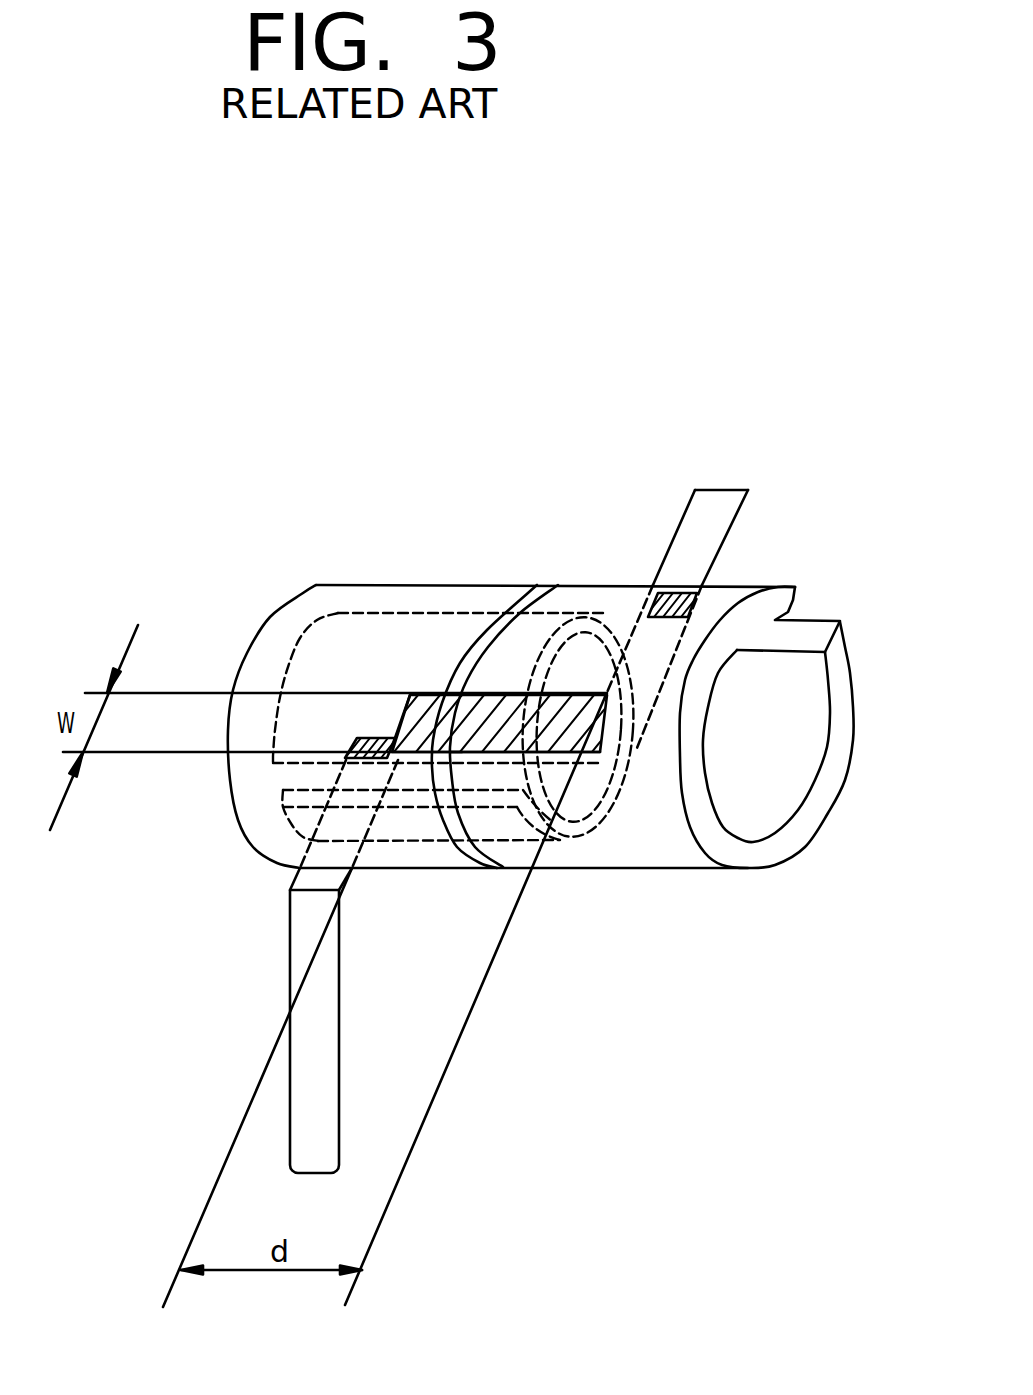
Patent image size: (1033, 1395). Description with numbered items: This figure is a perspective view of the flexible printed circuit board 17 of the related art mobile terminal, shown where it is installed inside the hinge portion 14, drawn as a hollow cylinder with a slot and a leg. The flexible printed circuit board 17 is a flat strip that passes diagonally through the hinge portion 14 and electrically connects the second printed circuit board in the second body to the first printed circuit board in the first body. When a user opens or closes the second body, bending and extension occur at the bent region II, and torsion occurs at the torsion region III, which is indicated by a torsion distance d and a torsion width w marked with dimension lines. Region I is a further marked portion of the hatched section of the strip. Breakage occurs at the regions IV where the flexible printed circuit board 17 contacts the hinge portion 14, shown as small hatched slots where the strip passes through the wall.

The hinge portion 14 is at (650, 852).
The flexible printed circuit board 17 is at (705, 535).
The strip section region I is at (611, 723).
The bent region II is at (394, 713).
The torsion region III is at (502, 722).
The region contacting with the hinge portion IV is at (366, 742).